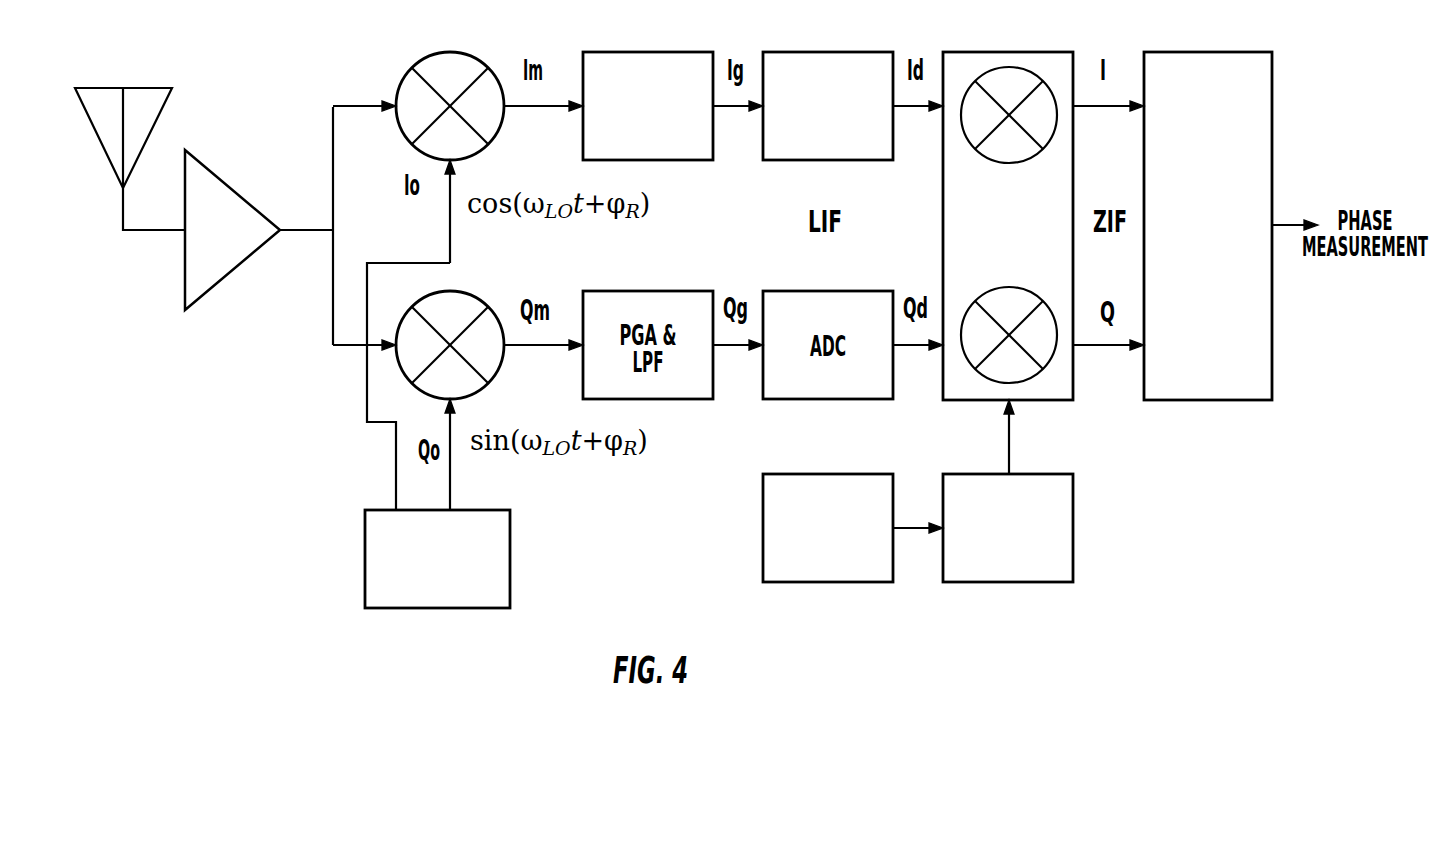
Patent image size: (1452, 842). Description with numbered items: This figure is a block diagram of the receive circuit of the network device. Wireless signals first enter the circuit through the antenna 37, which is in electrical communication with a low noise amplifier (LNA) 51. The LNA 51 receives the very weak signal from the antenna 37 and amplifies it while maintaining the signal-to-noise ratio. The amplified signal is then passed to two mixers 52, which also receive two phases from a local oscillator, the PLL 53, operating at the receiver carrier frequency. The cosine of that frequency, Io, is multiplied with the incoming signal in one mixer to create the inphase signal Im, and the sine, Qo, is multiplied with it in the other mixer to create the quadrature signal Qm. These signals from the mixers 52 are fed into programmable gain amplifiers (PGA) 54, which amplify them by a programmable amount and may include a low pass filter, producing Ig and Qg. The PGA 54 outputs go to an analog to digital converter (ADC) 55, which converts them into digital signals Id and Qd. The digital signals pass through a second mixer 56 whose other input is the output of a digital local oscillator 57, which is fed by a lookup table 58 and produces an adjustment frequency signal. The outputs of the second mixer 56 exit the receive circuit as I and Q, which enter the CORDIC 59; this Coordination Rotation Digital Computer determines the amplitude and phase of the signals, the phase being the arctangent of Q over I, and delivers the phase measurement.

The antenna 37 is at (143, 88).
The low noise amplifier (LNA) 51 is at (212, 292).
The mixers 52 is at (432, 52).
The PLL 53 is at (365, 562).
The programmable gain amplifier (PGA) 54 is at (648, 52).
The analog to digital converter (ADC) 55 is at (828, 52).
The second mixer 56 is at (1013, 52).
The digital local oscillator 57 is at (1012, 583).
The lookup table 58 is at (825, 583).
The CORDIC 59 is at (1208, 400).